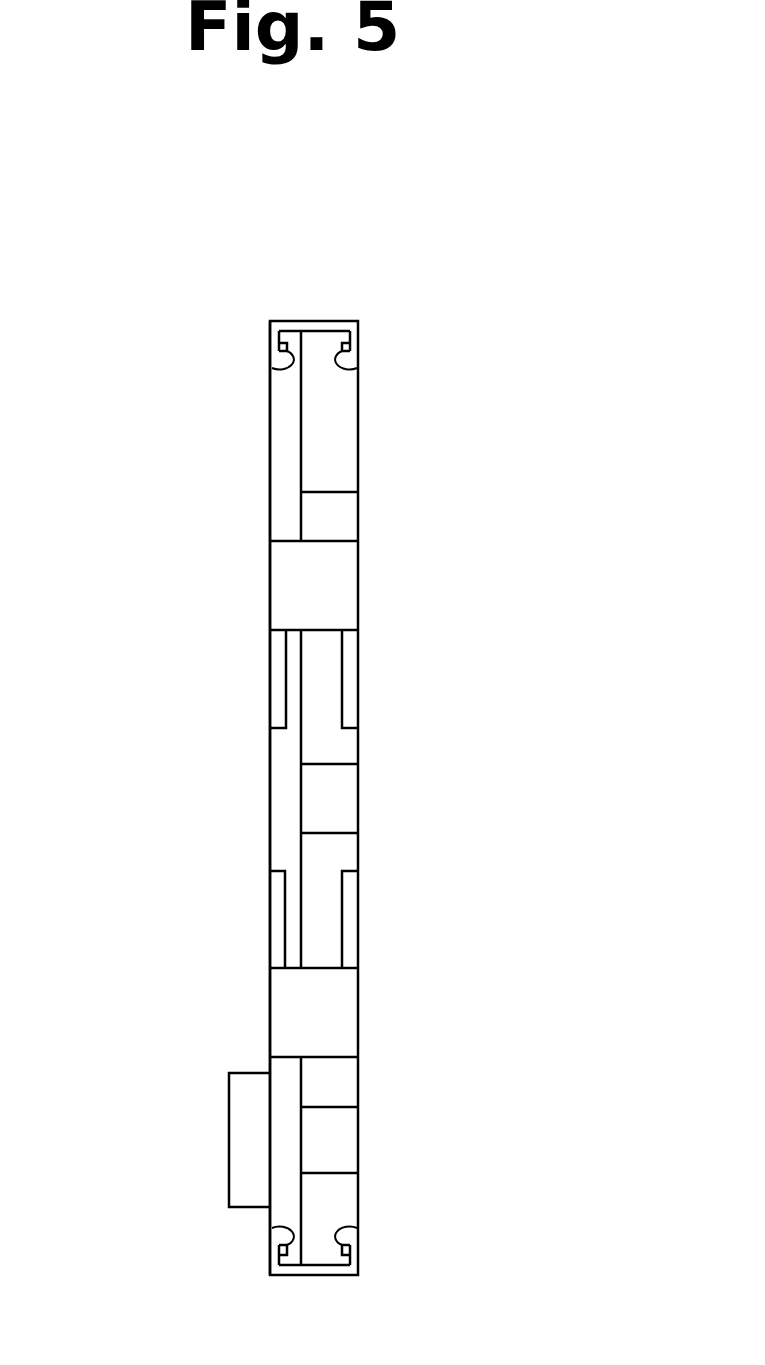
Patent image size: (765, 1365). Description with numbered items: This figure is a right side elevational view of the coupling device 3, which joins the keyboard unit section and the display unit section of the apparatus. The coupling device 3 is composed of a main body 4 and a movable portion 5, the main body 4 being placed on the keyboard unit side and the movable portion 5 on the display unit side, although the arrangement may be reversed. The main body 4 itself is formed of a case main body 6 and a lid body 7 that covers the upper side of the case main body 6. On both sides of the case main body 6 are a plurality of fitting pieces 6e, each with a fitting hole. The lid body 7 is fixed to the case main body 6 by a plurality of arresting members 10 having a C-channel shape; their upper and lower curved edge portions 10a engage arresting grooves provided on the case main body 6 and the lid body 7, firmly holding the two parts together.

The coupling device 3 is at (380, 478).
The main body 4 is at (264, 478).
The movable portion 5 is at (229, 1128).
The case main body 6 is at (340, 852).
The fitting pieces 6e is at (340, 440).
The lid body 7 is at (283, 793).
The arresting members 10 is at (340, 320).
The curved edge portions 10a is at (272, 368).